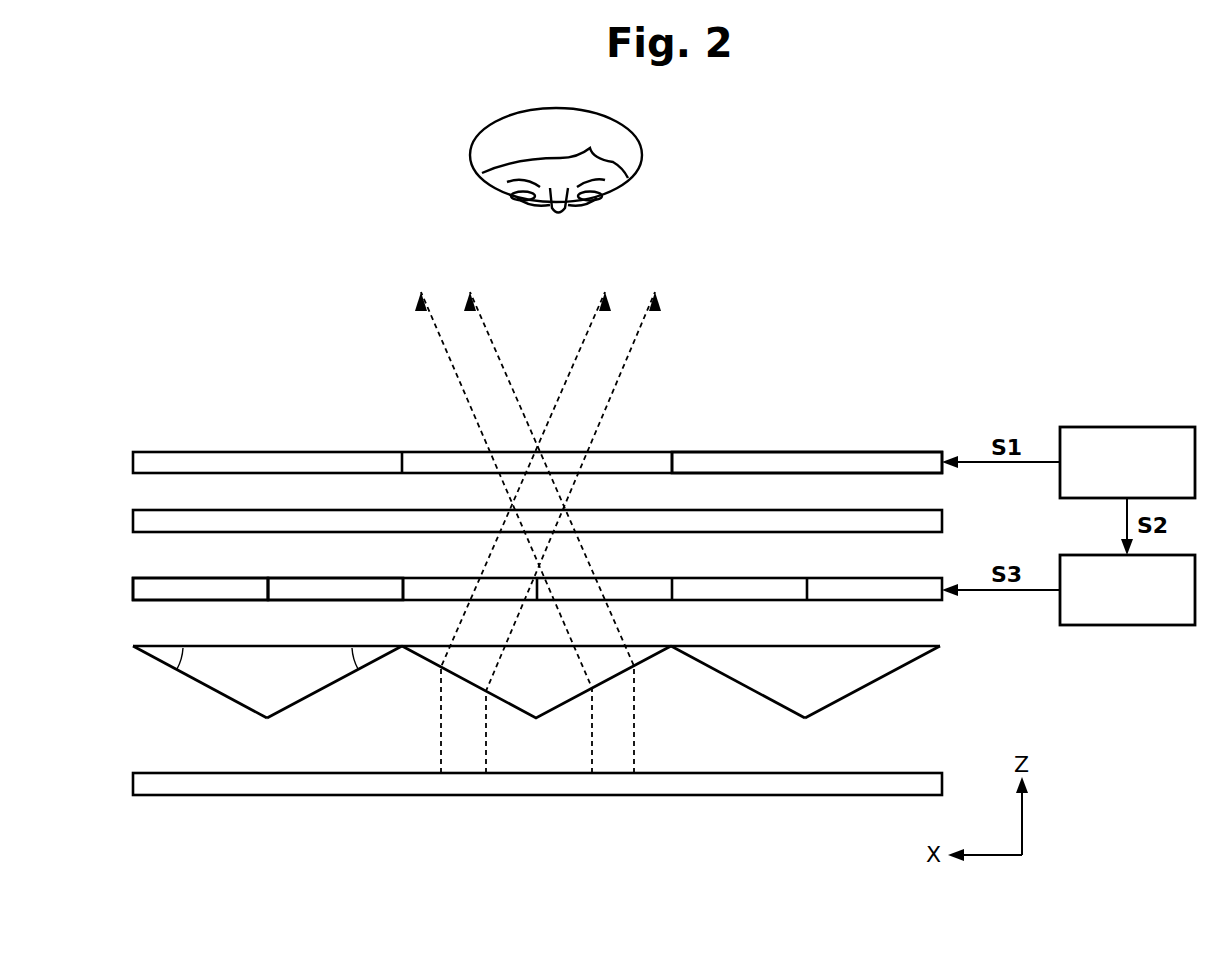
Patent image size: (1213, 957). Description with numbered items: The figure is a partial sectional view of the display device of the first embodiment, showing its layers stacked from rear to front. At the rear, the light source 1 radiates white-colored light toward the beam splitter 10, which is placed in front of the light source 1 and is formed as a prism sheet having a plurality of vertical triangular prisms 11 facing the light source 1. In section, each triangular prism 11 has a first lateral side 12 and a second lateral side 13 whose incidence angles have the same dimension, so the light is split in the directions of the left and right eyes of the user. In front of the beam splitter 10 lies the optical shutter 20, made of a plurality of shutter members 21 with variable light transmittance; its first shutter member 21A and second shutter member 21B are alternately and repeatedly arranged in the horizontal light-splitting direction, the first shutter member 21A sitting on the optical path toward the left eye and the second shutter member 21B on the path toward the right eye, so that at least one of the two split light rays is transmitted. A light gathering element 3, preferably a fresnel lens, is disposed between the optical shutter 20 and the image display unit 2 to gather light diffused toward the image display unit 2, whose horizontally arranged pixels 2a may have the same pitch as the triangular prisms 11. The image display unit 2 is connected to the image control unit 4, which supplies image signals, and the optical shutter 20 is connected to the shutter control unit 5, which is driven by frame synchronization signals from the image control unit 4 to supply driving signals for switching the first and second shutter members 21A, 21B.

The light source 1 is at (133, 780).
The image display unit 2 is at (879, 440).
The pixel 2a is at (783, 452).
The light gathering element 3 is at (135, 522).
The image control unit 4 is at (1118, 479).
The shutter control unit 5 is at (1118, 607).
The beam splitter 10 is at (539, 694).
The triangular prism 11 is at (763, 690).
The first lateral side 12 is at (212, 690).
The second lateral side 13 is at (320, 690).
The optical shutter 20 is at (124, 590).
The shutter member 21 is at (268, 476).
The first shutter member 21A is at (223, 585).
The second shutter member 21B is at (318, 585).